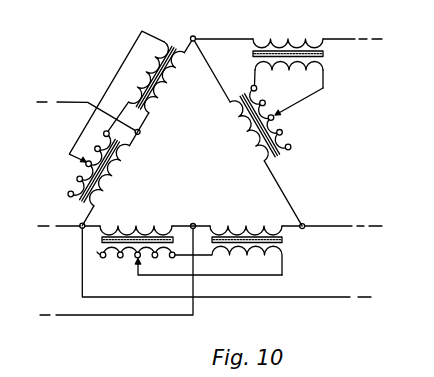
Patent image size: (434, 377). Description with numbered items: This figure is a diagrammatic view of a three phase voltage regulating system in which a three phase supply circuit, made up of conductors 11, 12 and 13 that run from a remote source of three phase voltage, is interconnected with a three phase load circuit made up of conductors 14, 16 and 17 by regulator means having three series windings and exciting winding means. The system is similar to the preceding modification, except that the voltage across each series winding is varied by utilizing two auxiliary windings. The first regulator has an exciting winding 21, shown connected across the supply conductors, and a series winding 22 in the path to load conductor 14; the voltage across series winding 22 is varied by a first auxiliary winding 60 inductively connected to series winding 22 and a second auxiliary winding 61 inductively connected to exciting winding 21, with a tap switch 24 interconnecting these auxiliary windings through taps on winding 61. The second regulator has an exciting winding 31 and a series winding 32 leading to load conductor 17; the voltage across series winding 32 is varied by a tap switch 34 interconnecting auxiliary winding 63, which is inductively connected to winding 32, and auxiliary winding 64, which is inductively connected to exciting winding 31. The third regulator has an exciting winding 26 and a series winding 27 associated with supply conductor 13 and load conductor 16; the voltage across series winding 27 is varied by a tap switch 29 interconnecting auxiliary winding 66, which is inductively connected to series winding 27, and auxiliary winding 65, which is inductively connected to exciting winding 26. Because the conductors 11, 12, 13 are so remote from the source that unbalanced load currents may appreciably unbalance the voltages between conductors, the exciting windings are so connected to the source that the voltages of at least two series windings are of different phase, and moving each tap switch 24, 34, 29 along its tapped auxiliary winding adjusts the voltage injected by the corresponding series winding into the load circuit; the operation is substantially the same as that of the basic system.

The conductor 11 is at (68, 222).
The conductor 12 is at (78, 315).
The conductor 13 is at (82, 102).
The conductor 14 is at (328, 297).
The conductor 16 is at (331, 226).
The conductor 17 is at (332, 39).
The exciting winding 21 is at (157, 225).
The series winding 22 is at (262, 226).
The tap switch 24 is at (143, 263).
The exciting winding 26 is at (128, 163).
The series winding 27 is at (170, 85).
The tap switch 29 is at (80, 162).
The exciting winding 31 is at (262, 146).
The series winding 32 is at (297, 32).
The tap switch 34 is at (281, 113).
The first auxiliary winding 60 is at (228, 261).
The second auxiliary winding 61 is at (108, 258).
The auxiliary winding 63 is at (289, 79).
The auxiliary winding 64 is at (290, 150).
The auxiliary winding 65 is at (103, 133).
The auxiliary winding 66 is at (172, 32).